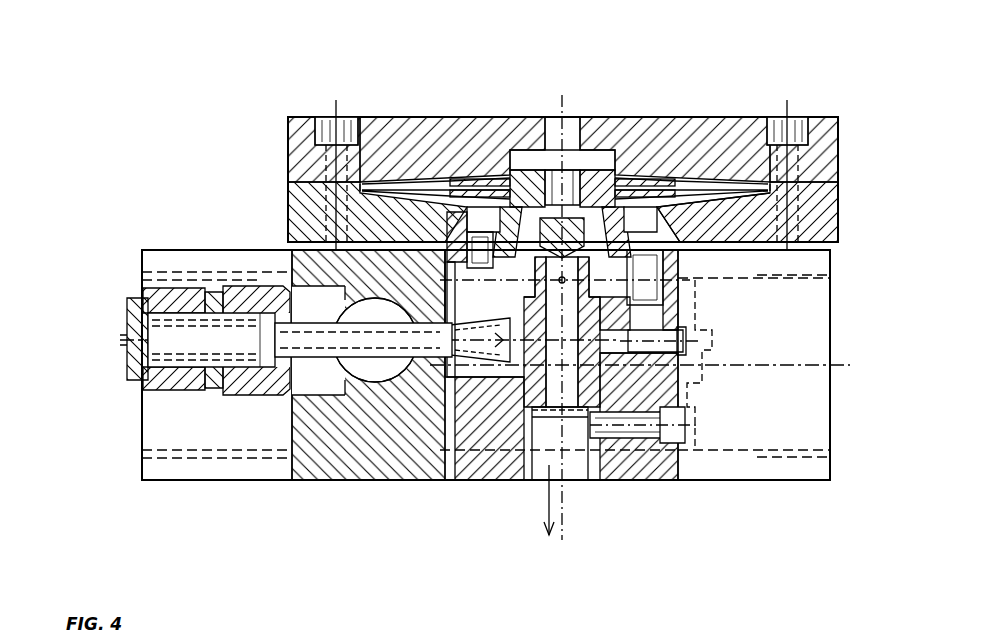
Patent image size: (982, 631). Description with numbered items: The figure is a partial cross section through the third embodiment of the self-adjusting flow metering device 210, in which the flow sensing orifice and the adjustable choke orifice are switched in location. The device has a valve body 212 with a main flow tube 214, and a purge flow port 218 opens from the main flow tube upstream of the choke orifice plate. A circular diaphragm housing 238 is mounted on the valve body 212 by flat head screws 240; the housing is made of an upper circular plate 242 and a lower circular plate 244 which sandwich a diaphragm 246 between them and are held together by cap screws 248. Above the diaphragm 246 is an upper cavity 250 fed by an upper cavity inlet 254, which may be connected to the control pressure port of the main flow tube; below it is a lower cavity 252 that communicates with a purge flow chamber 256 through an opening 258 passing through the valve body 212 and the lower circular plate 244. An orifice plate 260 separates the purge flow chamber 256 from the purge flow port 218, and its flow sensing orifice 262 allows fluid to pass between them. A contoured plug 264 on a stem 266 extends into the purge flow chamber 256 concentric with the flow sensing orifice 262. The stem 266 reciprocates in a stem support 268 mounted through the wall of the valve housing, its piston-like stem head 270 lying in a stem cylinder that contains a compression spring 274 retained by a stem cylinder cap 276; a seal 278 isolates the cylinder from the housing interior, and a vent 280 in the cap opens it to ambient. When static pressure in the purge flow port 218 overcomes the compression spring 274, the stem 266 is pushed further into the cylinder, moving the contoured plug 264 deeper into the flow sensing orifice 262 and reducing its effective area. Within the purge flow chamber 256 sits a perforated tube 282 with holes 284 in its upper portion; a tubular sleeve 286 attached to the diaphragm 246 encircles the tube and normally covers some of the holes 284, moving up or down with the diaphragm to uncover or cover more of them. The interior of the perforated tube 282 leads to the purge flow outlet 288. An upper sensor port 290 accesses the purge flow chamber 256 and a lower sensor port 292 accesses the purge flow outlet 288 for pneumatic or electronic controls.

The self-adjusting flow metering device 210 is at (115, 160).
The valve body 212 is at (170, 240).
The main flow tube 214 is at (157, 447).
The purge flow port 218 is at (345, 385).
The diaphragm housing 238 is at (226, 128).
The flat head screws 240 is at (470, 188).
The upper circular plate 242 is at (380, 117).
The lower circular plate 244 is at (288, 198).
The diaphragm 246 is at (710, 135).
The cap screws 248 is at (318, 118).
The upper cavity 250 is at (512, 120).
The lower cavity 252 is at (650, 130).
The upper cavity inlet 254 is at (562, 115).
The purge flow chamber 256 is at (500, 182).
The opening 258 is at (640, 265).
The orifice plate 260 is at (425, 482).
The flow sensing orifice 262 is at (452, 380).
The contoured plug 264 is at (496, 483).
The stem 266 is at (420, 390).
The stem support 268 is at (228, 398).
The stem head 270 is at (256, 398).
The compression spring 274 is at (198, 387).
The stem cylinder cap 276 is at (118, 370).
The seal 278 is at (345, 300).
The vent 280 is at (132, 334).
The perforated tube 282 is at (600, 312).
The holes 284 is at (605, 285).
The tubular sleeve 286 is at (580, 118).
The purge flow outlet 288 is at (578, 485).
The upper sensor port 290 is at (686, 345).
The lower sensor port 292 is at (688, 442).